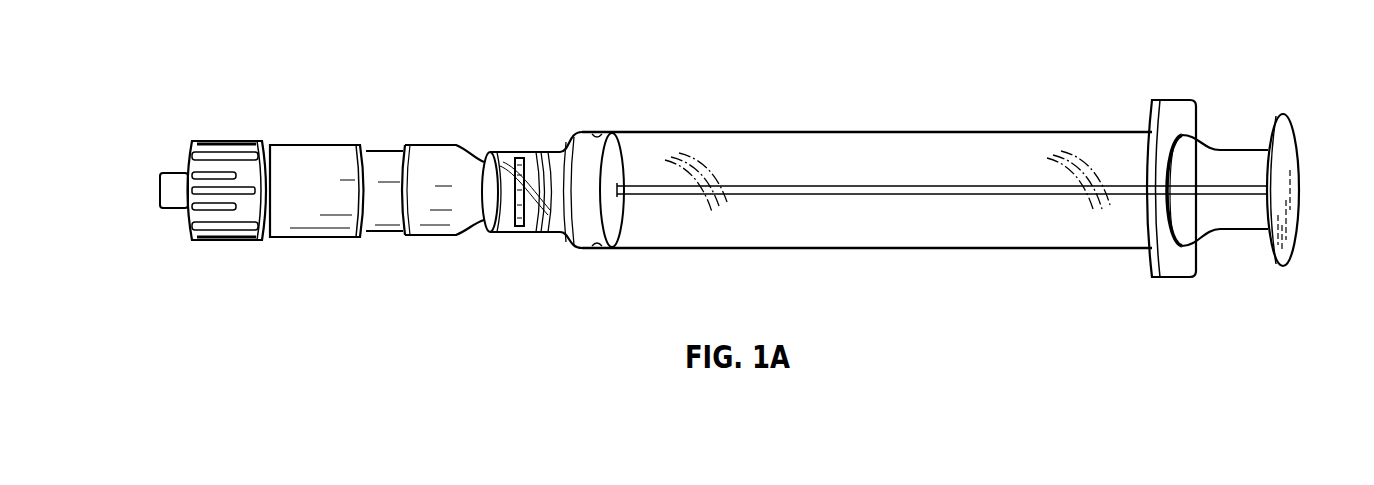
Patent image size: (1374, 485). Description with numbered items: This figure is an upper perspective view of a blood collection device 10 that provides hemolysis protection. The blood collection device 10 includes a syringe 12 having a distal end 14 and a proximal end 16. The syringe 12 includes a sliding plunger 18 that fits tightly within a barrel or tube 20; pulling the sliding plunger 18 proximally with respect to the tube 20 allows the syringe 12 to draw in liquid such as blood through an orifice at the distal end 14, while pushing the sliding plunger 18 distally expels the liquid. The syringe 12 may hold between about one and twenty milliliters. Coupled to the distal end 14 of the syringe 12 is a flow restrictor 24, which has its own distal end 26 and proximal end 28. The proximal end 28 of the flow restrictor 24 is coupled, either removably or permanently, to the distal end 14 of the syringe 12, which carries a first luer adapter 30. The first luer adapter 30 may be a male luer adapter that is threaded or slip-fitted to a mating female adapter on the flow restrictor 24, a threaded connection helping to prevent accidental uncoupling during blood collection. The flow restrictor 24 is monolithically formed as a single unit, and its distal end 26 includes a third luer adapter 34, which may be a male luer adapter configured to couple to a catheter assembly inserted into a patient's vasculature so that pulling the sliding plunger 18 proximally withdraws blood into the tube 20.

The blood collection device 10 is at (1211, 46).
The syringe 12 is at (886, 116).
The distal end 14 is at (487, 152).
The proximal end 16 is at (1287, 150).
The sliding plunger 18 is at (1218, 157).
The tube 20 is at (920, 250).
The flow restrictor 24 is at (333, 139).
The distal end 26 is at (145, 135).
The proximal end 28 is at (465, 138).
The first luer adapter 30 is at (512, 235).
The third luer adapter 34 is at (186, 229).